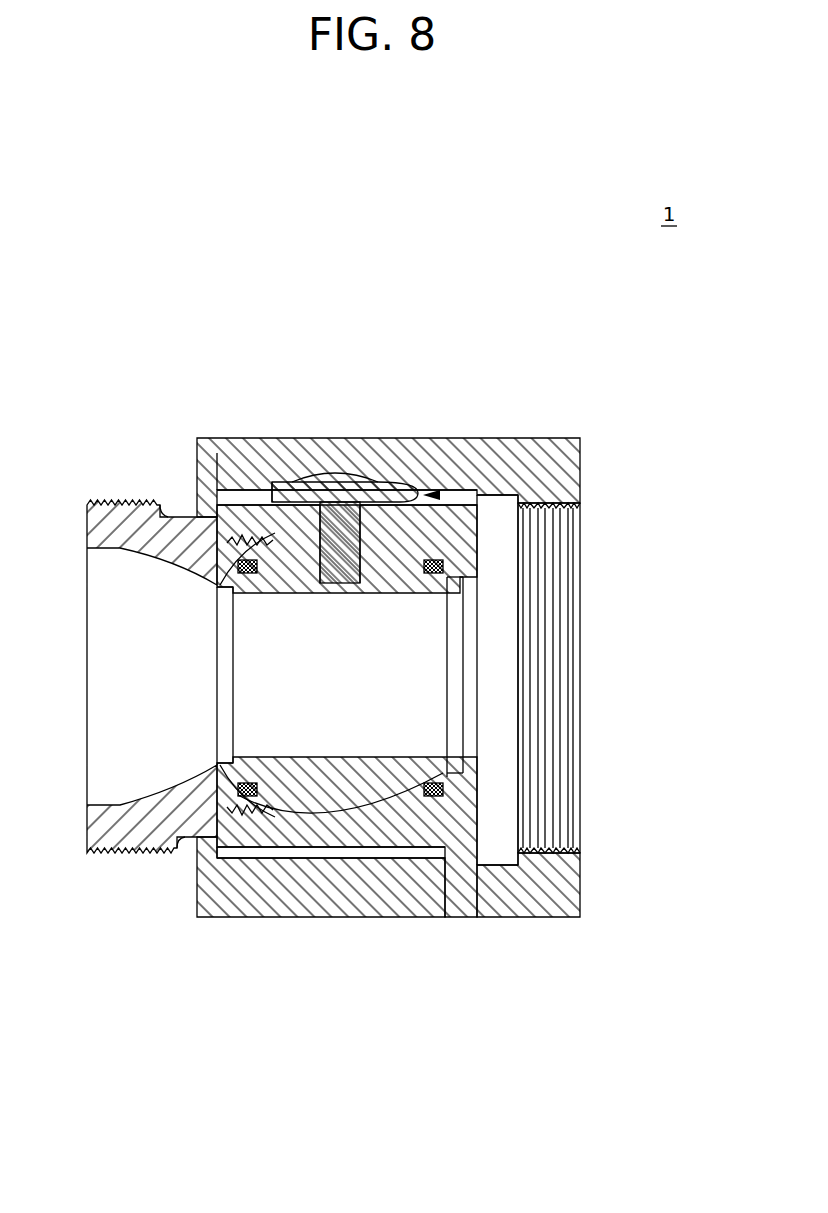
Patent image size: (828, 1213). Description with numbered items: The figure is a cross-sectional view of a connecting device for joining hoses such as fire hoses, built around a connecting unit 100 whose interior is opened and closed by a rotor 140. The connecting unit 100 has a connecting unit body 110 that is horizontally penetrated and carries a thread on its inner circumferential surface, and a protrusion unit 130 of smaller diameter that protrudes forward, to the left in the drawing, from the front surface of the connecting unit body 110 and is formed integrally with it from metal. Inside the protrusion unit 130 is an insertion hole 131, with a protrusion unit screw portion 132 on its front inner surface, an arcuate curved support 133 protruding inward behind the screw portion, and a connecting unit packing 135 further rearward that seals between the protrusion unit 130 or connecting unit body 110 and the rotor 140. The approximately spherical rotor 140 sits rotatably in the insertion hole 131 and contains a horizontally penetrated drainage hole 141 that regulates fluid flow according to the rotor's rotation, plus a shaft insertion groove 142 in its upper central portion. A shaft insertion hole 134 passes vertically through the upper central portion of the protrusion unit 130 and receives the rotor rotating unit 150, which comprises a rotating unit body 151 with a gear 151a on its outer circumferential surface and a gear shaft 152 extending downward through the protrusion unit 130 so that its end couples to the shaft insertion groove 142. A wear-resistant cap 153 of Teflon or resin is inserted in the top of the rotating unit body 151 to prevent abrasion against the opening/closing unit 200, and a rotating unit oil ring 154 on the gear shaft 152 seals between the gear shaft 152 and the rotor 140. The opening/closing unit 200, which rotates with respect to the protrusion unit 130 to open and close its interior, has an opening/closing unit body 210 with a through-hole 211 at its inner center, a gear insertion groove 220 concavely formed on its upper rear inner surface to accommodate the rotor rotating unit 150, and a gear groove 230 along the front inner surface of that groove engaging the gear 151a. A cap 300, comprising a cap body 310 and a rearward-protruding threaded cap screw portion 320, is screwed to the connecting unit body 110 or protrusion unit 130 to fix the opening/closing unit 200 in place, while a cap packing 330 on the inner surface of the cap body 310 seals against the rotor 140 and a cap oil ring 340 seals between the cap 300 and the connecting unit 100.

The connecting unit 100 is at (549, 418).
The connecting unit body 110 is at (530, 437).
The protrusion unit 130 is at (350, 875).
The insertion hole 131 is at (292, 870).
The protrusion unit screw portion 132 is at (180, 836).
The curved support 133 is at (435, 895).
The shaft insertion hole 134 is at (382, 480).
The connecting unit packing 135 is at (447, 778).
The rotor 140 is at (345, 832).
The drainage hole 141 is at (365, 772).
The shaft insertion groove 142 is at (345, 597).
The rotor rotating unit 150 is at (480, 492).
The rotating unit body 151 is at (383, 498).
The gear 151a is at (280, 487).
The gear shaft 152 is at (365, 552).
The wear-resistant cap 153 is at (340, 473).
The rotating unit oil ring 154 is at (362, 523).
The opening/closing unit 200 is at (245, 414).
The opening/closing unit body 210 is at (415, 898).
The through-hole 211 is at (250, 880).
The gear insertion groove 220 is at (455, 487).
The gear groove 230 is at (252, 438).
The cap 300 is at (126, 480).
The cap body 310 is at (197, 882).
The cap screw portion 320 is at (165, 500).
The cap packing 330 is at (235, 530).
The cap oil ring 340 is at (228, 830).